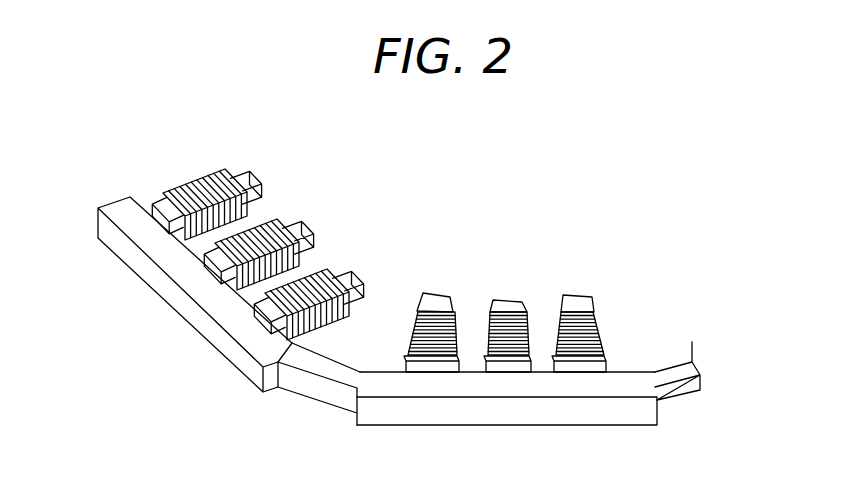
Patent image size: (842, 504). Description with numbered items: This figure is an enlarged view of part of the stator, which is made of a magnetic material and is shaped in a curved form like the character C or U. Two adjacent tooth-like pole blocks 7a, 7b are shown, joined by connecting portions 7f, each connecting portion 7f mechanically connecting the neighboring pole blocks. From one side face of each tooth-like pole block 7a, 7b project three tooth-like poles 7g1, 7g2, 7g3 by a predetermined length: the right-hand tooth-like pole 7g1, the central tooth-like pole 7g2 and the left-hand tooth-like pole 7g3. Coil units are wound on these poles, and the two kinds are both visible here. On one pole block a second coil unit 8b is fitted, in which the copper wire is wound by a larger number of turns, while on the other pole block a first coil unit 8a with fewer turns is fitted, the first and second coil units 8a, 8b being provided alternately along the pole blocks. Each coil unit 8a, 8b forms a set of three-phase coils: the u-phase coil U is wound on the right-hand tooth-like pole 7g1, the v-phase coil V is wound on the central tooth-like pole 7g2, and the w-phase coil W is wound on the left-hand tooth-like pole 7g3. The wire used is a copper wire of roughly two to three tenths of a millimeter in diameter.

The tooth-like pole block 7a is at (137, 268).
The tooth-like pole block 7b is at (543, 425).
The connecting portion 7f is at (307, 387).
The first coil unit 8a is at (600, 320).
The second coil unit 8b is at (208, 176).
The right-hand tooth-like pole 7g1 is at (352, 283).
The central tooth-like pole 7g2 is at (305, 222).
The left-hand tooth-like pole 7g3 is at (250, 182).
The u-phase coil U is at (336, 326).
The v-phase coil V is at (316, 244).
The w-phase coil W is at (267, 193).